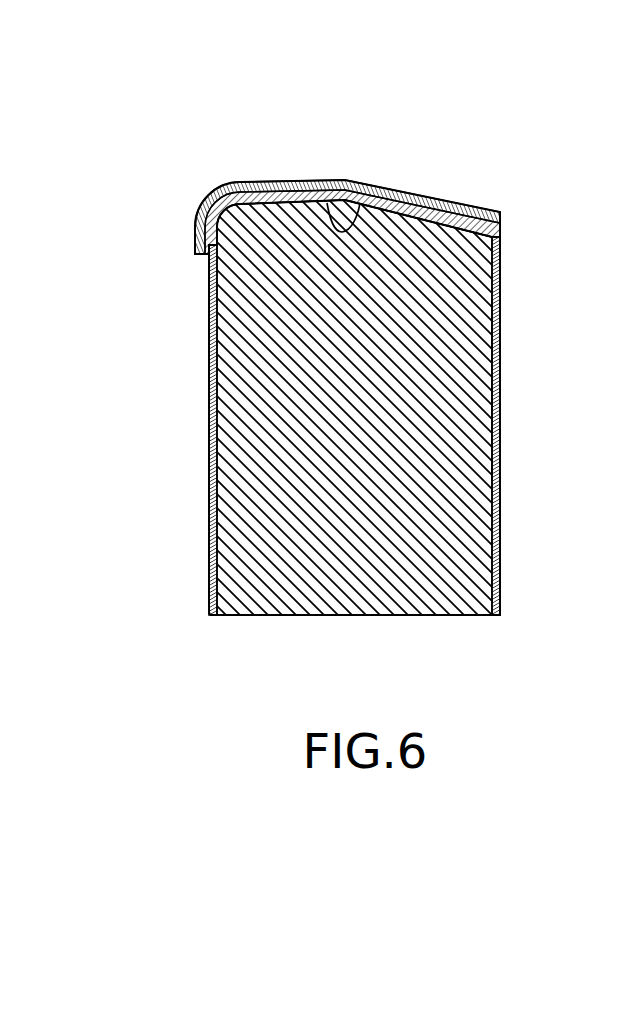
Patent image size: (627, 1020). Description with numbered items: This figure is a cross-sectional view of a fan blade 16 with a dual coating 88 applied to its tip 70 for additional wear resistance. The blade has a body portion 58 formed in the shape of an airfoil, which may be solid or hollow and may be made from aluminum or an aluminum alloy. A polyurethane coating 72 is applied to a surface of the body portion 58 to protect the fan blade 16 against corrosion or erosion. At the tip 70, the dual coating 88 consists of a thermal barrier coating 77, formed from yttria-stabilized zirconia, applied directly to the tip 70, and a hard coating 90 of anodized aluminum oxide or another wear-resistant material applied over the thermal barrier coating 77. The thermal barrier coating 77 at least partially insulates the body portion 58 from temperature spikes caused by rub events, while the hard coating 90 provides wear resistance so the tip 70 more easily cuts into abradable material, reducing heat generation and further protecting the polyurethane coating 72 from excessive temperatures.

The fan blade 16 is at (462, 322).
The body portion 58 is at (473, 397).
The polyurethane coating 72 is at (215, 375).
The dual coating 88 is at (207, 172).
The hard coating 90 is at (203, 210).
The thermal barrier coating 77 is at (197, 239).
The tip 70 is at (360, 203).